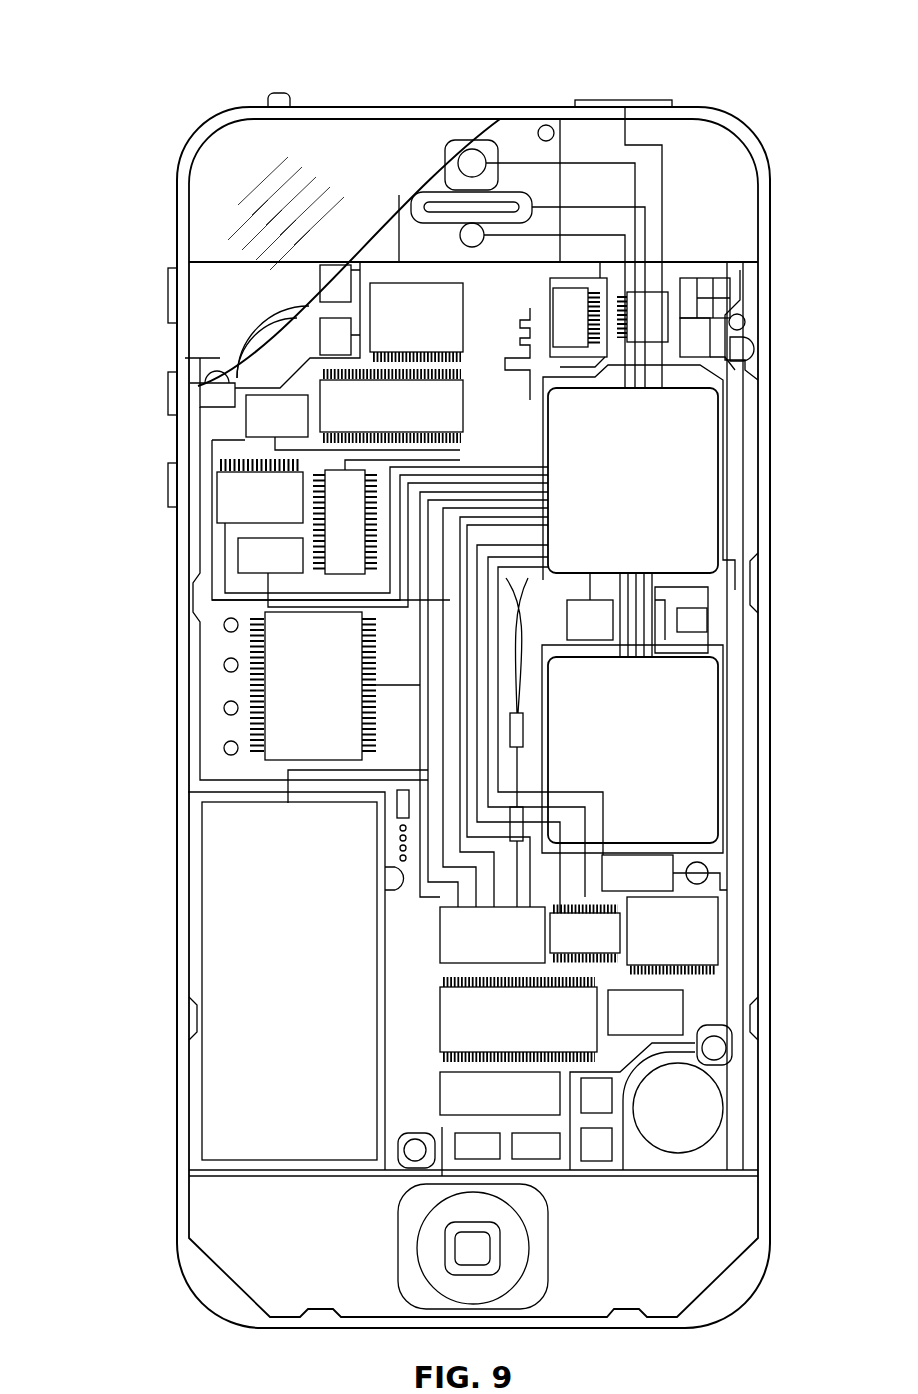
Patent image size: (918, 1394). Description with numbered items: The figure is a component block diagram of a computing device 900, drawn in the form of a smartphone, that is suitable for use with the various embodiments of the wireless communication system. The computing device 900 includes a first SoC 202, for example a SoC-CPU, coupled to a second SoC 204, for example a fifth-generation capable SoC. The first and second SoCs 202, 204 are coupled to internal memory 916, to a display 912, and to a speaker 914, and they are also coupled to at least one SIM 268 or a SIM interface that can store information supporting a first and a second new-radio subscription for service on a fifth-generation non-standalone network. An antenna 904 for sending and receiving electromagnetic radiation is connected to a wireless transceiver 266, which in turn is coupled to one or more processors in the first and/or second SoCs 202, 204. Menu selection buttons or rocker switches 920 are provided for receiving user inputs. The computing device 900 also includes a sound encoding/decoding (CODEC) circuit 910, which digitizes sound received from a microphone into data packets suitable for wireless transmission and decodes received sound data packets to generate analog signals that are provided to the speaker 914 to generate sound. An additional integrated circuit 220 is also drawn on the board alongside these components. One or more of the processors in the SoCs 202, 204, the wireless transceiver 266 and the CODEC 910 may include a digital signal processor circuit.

The computing device 900 is at (90, 60).
The display 912 is at (205, 220).
The menu selection buttons or rocker switches 920 is at (178, 383).
The speaker 914 is at (430, 195).
The antenna 904 is at (603, 100).
The wireless transceiver 266 is at (672, 292).
The sound encoding/decoding (CODEC) circuit 910 is at (398, 327).
The memory 220 is at (373, 417).
The SIM 268 is at (241, 506).
The first SoC 202 is at (614, 492).
The second SoC 204 is at (614, 761).
The internal memory 916 is at (499, 1030).